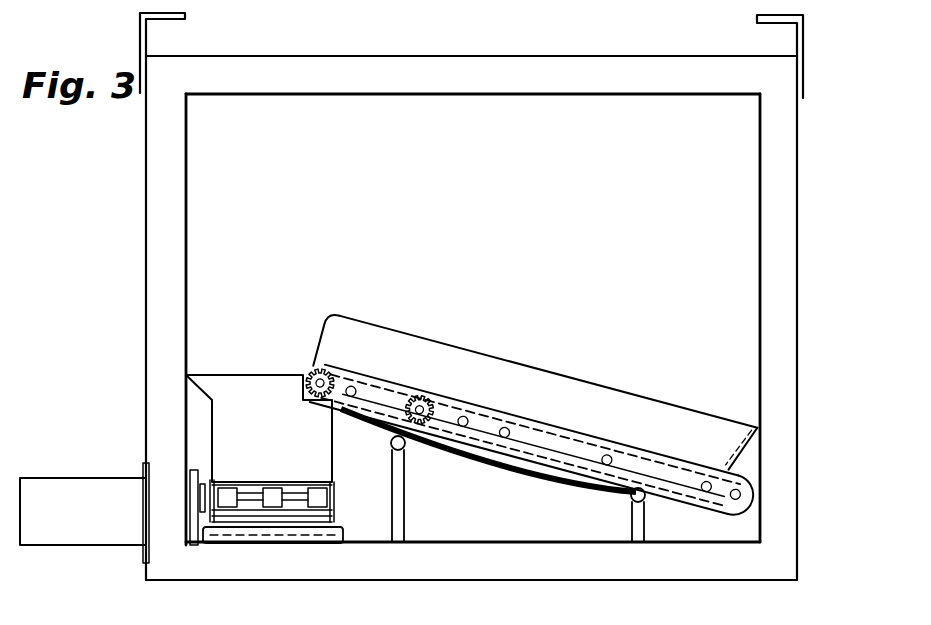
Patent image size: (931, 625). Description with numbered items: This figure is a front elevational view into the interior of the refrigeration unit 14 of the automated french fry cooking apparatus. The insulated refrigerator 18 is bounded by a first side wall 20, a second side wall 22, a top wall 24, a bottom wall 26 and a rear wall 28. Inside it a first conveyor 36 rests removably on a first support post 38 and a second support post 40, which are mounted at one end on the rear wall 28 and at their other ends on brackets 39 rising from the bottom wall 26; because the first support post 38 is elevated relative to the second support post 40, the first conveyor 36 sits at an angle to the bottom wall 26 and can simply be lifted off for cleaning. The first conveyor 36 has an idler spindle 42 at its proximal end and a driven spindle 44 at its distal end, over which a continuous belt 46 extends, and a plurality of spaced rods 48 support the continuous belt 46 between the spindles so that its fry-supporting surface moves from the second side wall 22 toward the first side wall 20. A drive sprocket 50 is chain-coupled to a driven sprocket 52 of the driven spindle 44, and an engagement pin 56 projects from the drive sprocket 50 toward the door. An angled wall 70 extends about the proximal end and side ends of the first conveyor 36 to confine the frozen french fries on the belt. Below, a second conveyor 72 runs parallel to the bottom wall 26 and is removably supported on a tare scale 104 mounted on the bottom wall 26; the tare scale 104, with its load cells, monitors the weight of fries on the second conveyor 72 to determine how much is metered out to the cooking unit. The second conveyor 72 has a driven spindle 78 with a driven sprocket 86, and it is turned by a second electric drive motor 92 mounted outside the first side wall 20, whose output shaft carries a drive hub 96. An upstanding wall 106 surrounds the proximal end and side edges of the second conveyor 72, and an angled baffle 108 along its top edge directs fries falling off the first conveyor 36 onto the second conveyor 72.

The refrigeration unit 14 is at (808, 158).
The insulated refrigerator 18 is at (312, 56).
The first side wall 20 is at (163, 217).
The second side wall 22 is at (799, 228).
The top wall 24 is at (497, 66).
The bottom wall 26 is at (498, 568).
The rear wall 28 is at (612, 620).
The first conveyor 36 is at (564, 423).
The first support post 38 is at (407, 443).
The brackets 39 is at (405, 510).
The second support post 40 is at (645, 499).
The idler spindle 42 is at (758, 488).
The driven spindle 44 is at (311, 372).
The continuous belt 46 is at (594, 436).
The spaced rods 48 is at (507, 440).
The drive sprocket 50 is at (488, 363).
The driven sprocket 52 is at (330, 358).
The engagement pin 56 is at (428, 395).
The angled wall 70 is at (704, 420).
The second conveyor 72 is at (262, 478).
The driven spindle 78 is at (337, 496).
The driven sprocket 86 is at (190, 524).
The second electric drive motor 92 is at (76, 530).
The drive hub 96 is at (196, 478).
The tare scale 104 is at (347, 545).
The upstanding wall 106 is at (333, 438).
The angled baffle 108 is at (212, 372).